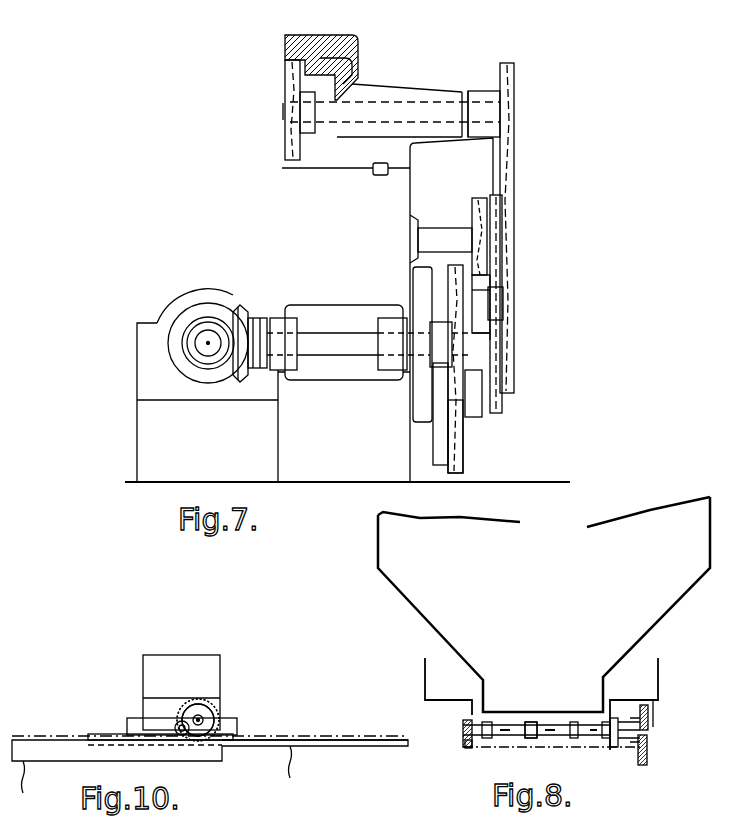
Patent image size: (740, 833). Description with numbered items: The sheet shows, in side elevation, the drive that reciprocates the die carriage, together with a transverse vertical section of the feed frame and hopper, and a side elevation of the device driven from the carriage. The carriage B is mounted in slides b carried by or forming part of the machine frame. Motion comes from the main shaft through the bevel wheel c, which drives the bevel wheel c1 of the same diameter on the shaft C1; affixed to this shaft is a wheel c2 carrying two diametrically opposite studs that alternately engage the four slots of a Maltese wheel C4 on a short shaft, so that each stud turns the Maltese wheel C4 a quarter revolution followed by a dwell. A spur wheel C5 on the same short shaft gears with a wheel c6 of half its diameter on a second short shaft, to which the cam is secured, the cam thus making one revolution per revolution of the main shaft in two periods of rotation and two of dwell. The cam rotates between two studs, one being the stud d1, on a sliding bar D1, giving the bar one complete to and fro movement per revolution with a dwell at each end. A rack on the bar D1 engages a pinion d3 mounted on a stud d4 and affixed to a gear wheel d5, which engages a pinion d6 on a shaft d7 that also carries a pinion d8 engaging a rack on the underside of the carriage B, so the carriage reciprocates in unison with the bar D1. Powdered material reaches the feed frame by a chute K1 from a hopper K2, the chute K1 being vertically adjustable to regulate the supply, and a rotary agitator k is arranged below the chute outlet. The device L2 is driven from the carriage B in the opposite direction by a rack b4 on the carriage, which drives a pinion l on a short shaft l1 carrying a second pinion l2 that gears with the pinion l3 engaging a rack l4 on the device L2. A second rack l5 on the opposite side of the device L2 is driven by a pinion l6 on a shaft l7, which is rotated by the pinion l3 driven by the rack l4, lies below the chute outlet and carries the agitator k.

In FIG. 7, the carriage B is at (284, 46).
In FIG. 7, the slides b is at (360, 57).
In FIG. 8, the rack b4 is at (658, 747).
In FIG. 10, the rack b4 is at (73, 737).
In FIG. 7, the bevel wheel c is at (178, 327).
In FIG. 7, the bevel wheel c1 is at (238, 310).
In FIG. 7, the shaft C1 is at (322, 340).
In FIG. 7, the wheel c2 is at (423, 390).
In FIG. 7, the Maltese wheel C4 is at (437, 447).
In FIG. 7, the plate C5 is at (465, 447).
In FIG. 7, the wheel c6 is at (449, 293).
In FIG. 7, the stud d1 is at (503, 293).
In FIG. 7, the sliding bar D1 is at (490, 326).
In FIG. 7, the pinion d3 is at (477, 198).
In FIG. 7, the stud d4 is at (450, 238).
In FIG. 7, the gear wheel d5 is at (512, 230).
In FIG. 7, the pinion d6 is at (508, 95).
In FIG. 7, the shaft d7 is at (413, 100).
In FIG. 7, the pinion d8 is at (285, 132).
In FIG. 8, the chute K1 is at (487, 693).
In FIG. 8, the hopper K2 is at (458, 652).
In FIG. 8, the rotary agitator k is at (573, 722).
In FIG. 8, the pinion l is at (637, 735).
In FIG. 10, the pinion l is at (217, 715).
In FIG. 10, the short shaft l1 is at (198, 705).
In FIG. 8, the gear l2 is at (618, 710).
In FIG. 10, the gear l2 is at (193, 713).
In FIG. 8, the pinion l3 is at (612, 745).
In FIG. 10, the pinion l3 is at (177, 718).
In FIG. 8, the rack l4 is at (615, 738).
In FIG. 10, the rack l4 is at (250, 737).
In FIG. 8, the second rack l5 is at (467, 747).
In FIG. 8, the pinion l6 is at (463, 728).
In FIG. 8, the shaft l7 is at (515, 728).
In FIG. 10, the shaft l7 is at (183, 730).
In FIG. 10, the device L2 is at (317, 742).